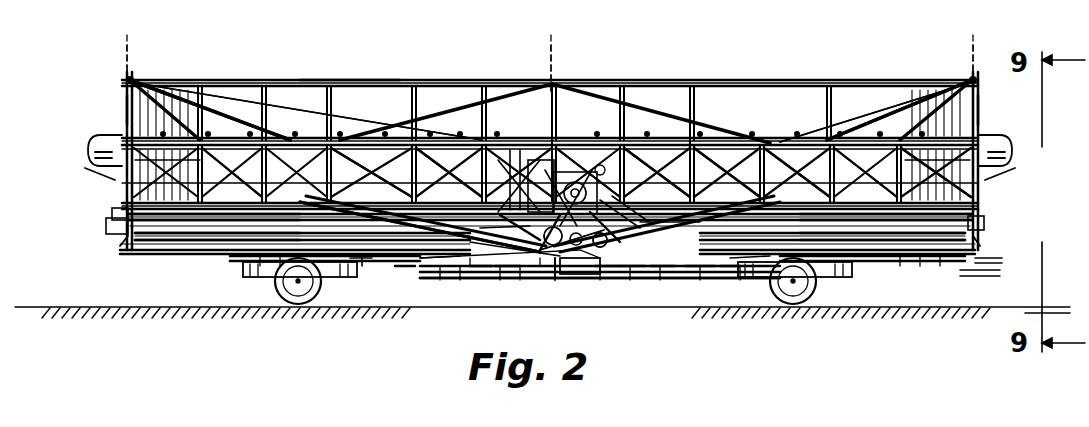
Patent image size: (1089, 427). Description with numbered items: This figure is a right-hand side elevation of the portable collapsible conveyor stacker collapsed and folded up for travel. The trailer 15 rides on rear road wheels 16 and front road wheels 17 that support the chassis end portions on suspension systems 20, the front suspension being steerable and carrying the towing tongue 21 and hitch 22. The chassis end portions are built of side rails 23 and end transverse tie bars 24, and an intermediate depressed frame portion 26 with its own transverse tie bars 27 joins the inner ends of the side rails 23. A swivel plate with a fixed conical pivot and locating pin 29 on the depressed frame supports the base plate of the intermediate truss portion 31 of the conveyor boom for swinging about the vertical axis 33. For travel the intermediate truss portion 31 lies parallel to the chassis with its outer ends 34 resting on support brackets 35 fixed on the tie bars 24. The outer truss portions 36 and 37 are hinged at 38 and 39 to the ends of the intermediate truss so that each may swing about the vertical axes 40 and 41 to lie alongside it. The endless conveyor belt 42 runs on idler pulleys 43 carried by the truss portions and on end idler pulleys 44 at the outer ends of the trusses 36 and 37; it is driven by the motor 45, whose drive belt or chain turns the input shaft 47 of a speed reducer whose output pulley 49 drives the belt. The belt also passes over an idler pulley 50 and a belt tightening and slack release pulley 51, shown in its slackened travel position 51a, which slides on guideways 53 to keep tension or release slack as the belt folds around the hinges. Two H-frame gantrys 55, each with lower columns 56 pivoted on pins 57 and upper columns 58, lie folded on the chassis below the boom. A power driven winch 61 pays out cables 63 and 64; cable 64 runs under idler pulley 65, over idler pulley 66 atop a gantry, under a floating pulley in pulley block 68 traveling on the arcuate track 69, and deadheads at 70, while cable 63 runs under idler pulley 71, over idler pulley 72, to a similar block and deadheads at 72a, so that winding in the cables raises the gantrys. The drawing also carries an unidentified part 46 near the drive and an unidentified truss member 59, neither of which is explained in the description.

The trailer 15 is at (447, 290).
The rear road wheels 16 is at (297, 304).
The front road wheels 17 is at (786, 304).
The suspension systems 20 is at (262, 278).
The towing tongue 21 is at (998, 266).
The hitch 22 is at (992, 274).
The side rails 23 is at (226, 249).
The end transverse tie bars 24 is at (158, 249).
The intermediate depressed frame portion 26 is at (567, 292).
The transverse tie bars 27 is at (406, 280).
The conical pivot and locating pin 29 is at (554, 282).
The intermediate truss portion 31 is at (337, 68).
The vertical axis 33 is at (553, 50).
The outer ends 34 is at (125, 207).
The support brackets 35 is at (124, 237).
The outer truss portion 36 is at (690, 124).
The outer truss portion 37 is at (742, 186).
The hinge 38 is at (125, 111).
The hinge 39 is at (980, 111).
The vertical axis 40 is at (125, 53).
The vertical axis 41 is at (971, 53).
The endless conveyor belt 42 is at (248, 129).
The idler pulleys 43 is at (352, 138).
The end idler pulleys 44 is at (92, 141).
The motor 45 is at (572, 275).
The drive sprocket 46 is at (600, 233).
The input shaft 47 is at (662, 280).
The output pulley 49 is at (660, 186).
The idler pulley 50 is at (603, 172).
The belt tightening and slack release pulley 51 is at (548, 160).
The position of belt tightener pulley 51a is at (576, 150).
The guideways 53 is at (442, 168).
The gantrys 55 is at (212, 166).
The lower columns 56 is at (438, 259).
The pins 57 is at (506, 280).
The upper columns 58 is at (192, 237).
The truss diagonal 59 is at (332, 170).
The power driven winch 61 is at (698, 282).
The cable 63 is at (362, 268).
The cable 64 is at (886, 256).
The idler pulley 65 is at (630, 280).
The idler pulley 66 is at (984, 227).
The pulley block 68 is at (546, 233).
The arcuate track 69 is at (553, 247).
The deadhead 70 is at (950, 197).
The idler pulley 71 is at (480, 280).
The idler pulley 72 is at (106, 227).
The deadhead 72a is at (112, 215).